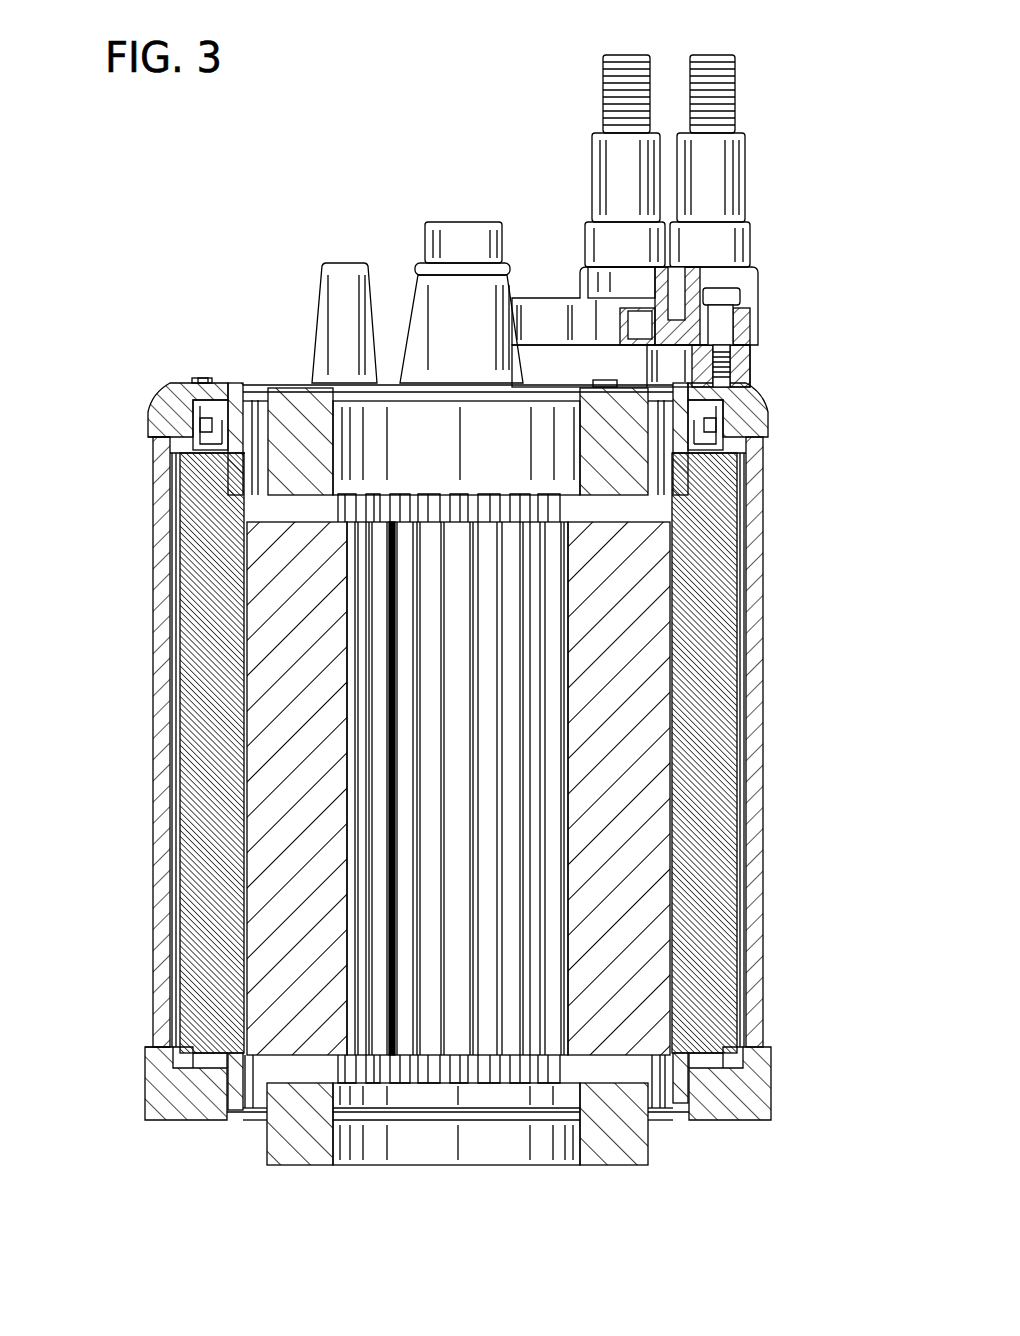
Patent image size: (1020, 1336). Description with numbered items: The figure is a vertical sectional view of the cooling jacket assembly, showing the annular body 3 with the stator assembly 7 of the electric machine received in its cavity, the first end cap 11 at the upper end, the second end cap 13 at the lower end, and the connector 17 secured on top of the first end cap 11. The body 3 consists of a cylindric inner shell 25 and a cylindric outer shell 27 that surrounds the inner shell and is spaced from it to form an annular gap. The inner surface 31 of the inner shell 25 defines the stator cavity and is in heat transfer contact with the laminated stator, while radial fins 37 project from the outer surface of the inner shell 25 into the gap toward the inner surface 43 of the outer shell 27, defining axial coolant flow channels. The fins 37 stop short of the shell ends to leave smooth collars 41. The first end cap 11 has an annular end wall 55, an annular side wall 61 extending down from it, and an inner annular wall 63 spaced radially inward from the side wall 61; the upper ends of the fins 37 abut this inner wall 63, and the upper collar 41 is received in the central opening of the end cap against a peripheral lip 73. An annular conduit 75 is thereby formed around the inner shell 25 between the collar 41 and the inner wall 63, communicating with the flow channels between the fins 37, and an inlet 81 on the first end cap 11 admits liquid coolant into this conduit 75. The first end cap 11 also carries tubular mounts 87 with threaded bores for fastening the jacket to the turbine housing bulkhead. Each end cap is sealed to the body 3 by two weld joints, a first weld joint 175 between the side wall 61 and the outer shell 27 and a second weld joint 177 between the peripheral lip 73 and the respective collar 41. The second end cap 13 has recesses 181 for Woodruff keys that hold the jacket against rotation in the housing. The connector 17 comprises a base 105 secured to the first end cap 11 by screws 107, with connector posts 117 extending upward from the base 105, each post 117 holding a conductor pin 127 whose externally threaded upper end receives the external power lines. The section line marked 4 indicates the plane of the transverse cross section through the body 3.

The annular body 3 is at (461, 742).
The section line 4- 4 is at (103, 770).
The stator assembly 7 is at (642, 690).
The first end cap 11 is at (674, 326).
The second end cap 13 is at (459, 1113).
The connector 17 is at (667, 134).
The inner shell 25 is at (716, 1018).
The outer shell 27 is at (752, 962).
The inner surface 31 is at (657, 1098).
The radial fins 37 is at (192, 503).
The collars 41 is at (746, 452).
The inner surface of outer shell 43 is at (162, 645).
The annular end wall 55 is at (193, 384).
The annular side wall 61 is at (204, 421).
The inner annular wall 63 is at (192, 438).
The peripheral lip 73 is at (204, 378).
The annular conduit 75 is at (170, 407).
The inlet 81 is at (481, 222).
The tubular mounts 87 is at (344, 263).
The base 105 is at (762, 286).
The screws 107 is at (728, 332).
The connector posts 117 is at (667, 134).
The conductor pin 127 is at (622, 55).
The first weld joint 175 is at (160, 462).
The second weld joint 177 is at (233, 388).
The recesses 181 is at (770, 1075).